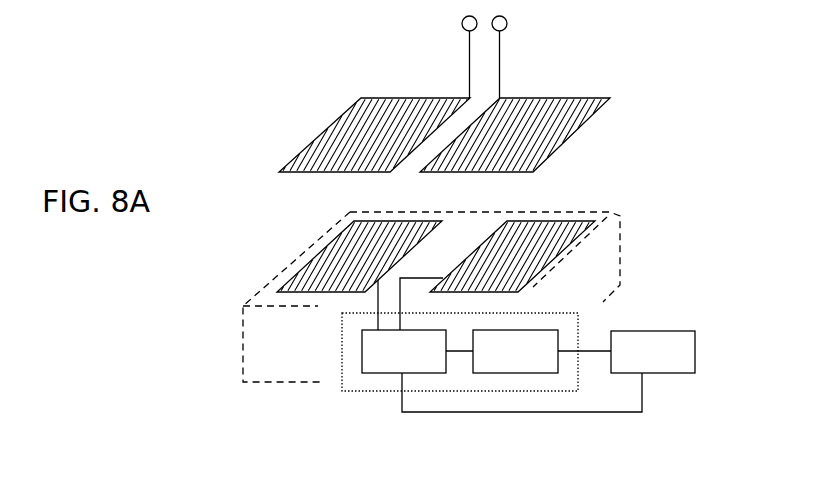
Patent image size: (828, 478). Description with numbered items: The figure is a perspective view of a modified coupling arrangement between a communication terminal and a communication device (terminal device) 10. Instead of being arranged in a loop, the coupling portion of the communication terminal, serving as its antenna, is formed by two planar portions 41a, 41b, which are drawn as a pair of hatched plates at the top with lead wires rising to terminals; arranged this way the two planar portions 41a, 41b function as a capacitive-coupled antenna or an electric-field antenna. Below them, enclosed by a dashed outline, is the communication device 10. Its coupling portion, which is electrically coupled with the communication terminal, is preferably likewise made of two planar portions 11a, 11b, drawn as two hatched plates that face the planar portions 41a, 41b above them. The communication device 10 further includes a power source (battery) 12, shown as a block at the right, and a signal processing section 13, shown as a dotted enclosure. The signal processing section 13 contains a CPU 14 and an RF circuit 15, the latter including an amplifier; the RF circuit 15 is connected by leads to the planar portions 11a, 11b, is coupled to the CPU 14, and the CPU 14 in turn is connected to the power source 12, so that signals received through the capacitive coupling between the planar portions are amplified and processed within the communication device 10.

The communication device (terminal device) 10 is at (620, 248).
The planar portion 11a is at (560, 242).
The planar portion 11b is at (340, 253).
The power source (battery) 12 is at (676, 331).
The signal processing section 13 is at (365, 392).
The CPU 14 is at (523, 373).
The RF circuit 15 is at (429, 373).
The planar portion 41a is at (573, 98).
The planar portion 41b is at (393, 98).